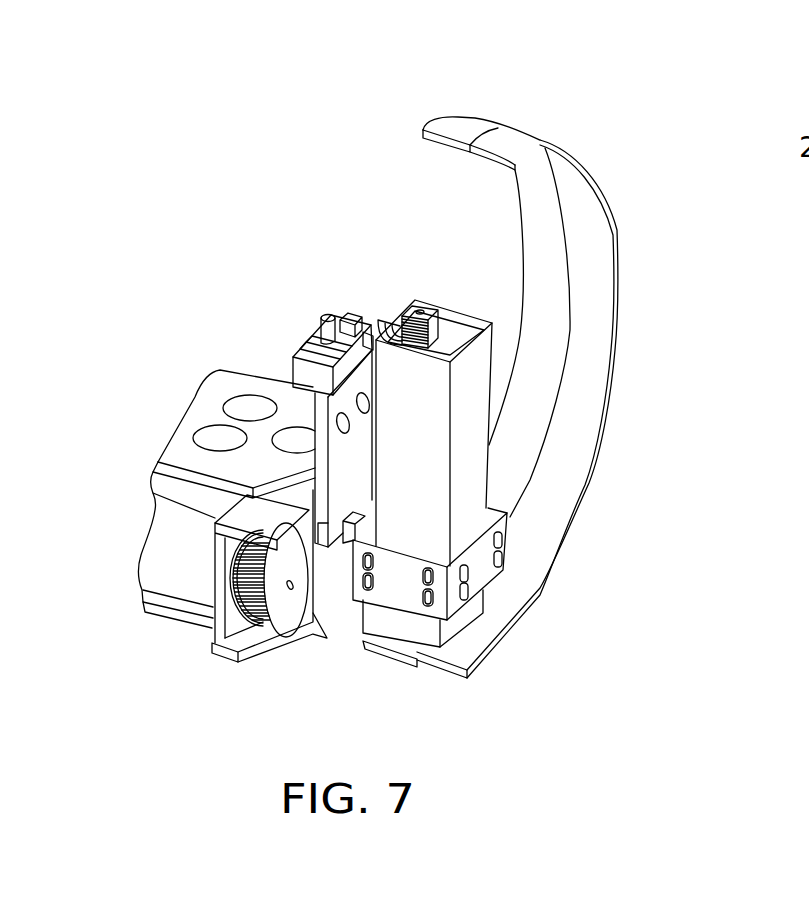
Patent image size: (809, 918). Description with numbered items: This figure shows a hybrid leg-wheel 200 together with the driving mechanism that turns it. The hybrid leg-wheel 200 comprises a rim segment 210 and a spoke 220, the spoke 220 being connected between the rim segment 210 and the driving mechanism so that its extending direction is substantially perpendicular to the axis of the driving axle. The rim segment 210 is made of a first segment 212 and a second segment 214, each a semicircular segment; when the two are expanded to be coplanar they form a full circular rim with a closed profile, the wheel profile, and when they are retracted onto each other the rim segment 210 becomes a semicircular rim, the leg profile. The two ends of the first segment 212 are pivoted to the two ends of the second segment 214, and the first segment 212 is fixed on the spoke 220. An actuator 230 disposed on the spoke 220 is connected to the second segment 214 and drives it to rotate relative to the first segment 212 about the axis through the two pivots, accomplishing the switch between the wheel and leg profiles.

The hybrid leg-wheel 200 is at (590, 397).
The rim segment 210 is at (582, 397).
The first segment 212 is at (515, 465).
The second segment 214 is at (577, 430).
The spoke 220 is at (483, 368).
The actuator 230 is at (400, 318).